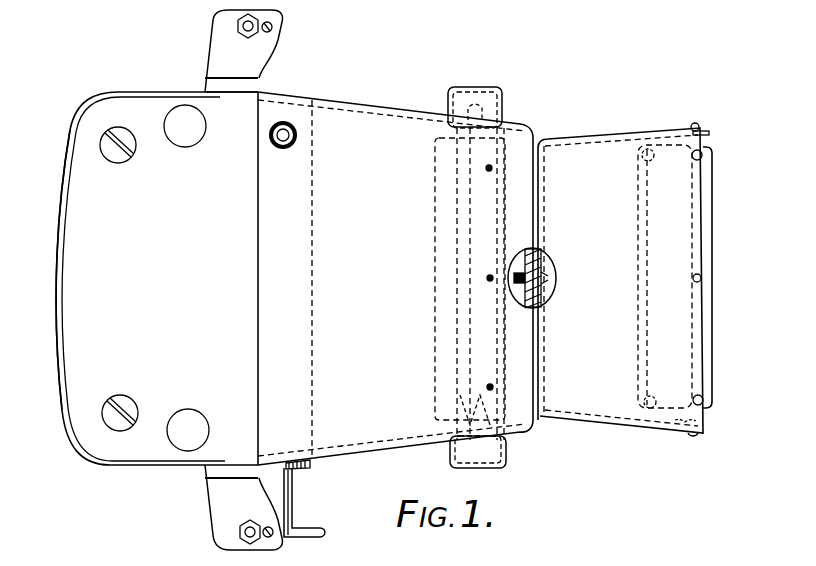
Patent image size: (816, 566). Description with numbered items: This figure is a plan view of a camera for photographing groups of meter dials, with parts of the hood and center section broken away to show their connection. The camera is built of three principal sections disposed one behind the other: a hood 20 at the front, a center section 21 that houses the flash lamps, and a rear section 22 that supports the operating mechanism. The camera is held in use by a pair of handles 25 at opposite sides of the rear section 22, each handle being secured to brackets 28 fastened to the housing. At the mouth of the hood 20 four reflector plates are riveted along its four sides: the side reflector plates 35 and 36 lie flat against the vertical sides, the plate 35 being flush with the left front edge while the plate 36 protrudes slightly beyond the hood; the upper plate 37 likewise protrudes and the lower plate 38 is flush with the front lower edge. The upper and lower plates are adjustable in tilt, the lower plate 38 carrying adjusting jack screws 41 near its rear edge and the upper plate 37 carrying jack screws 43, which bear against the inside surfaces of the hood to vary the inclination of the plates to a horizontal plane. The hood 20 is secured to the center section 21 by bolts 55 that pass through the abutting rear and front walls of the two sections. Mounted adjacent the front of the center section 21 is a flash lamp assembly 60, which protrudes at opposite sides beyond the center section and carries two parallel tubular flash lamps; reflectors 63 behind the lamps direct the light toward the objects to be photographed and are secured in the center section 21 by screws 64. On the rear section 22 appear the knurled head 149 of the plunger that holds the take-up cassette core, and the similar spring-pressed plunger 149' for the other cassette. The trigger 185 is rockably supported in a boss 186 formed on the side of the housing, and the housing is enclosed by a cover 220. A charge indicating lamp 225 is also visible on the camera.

The hood 20 is at (605, 130).
The center section 21 is at (378, 114).
The rear section 22 is at (100, 432).
The handles 25 is at (278, 32).
The brackets 28 is at (213, 44).
The reflector plate 35 is at (677, 422).
The reflector plate 36 is at (705, 134).
The upper reflector plate 37 is at (710, 262).
The lower reflector plate 38 is at (638, 336).
The adjusting jack screws 41 is at (656, 398).
The jack screws 43 is at (652, 160).
The bolts 55 is at (548, 280).
The flash lamp assembly 60 is at (491, 90).
The reflectors 63 is at (435, 284).
The screws 64 is at (492, 387).
The knurled head 149 is at (199, 136).
The spring-pressed plunger 149' is at (208, 430).
The trigger 185 is at (312, 503).
The boss 186 is at (312, 470).
The cover 220 is at (60, 355).
The charge indicating lamp 225 is at (287, 148).